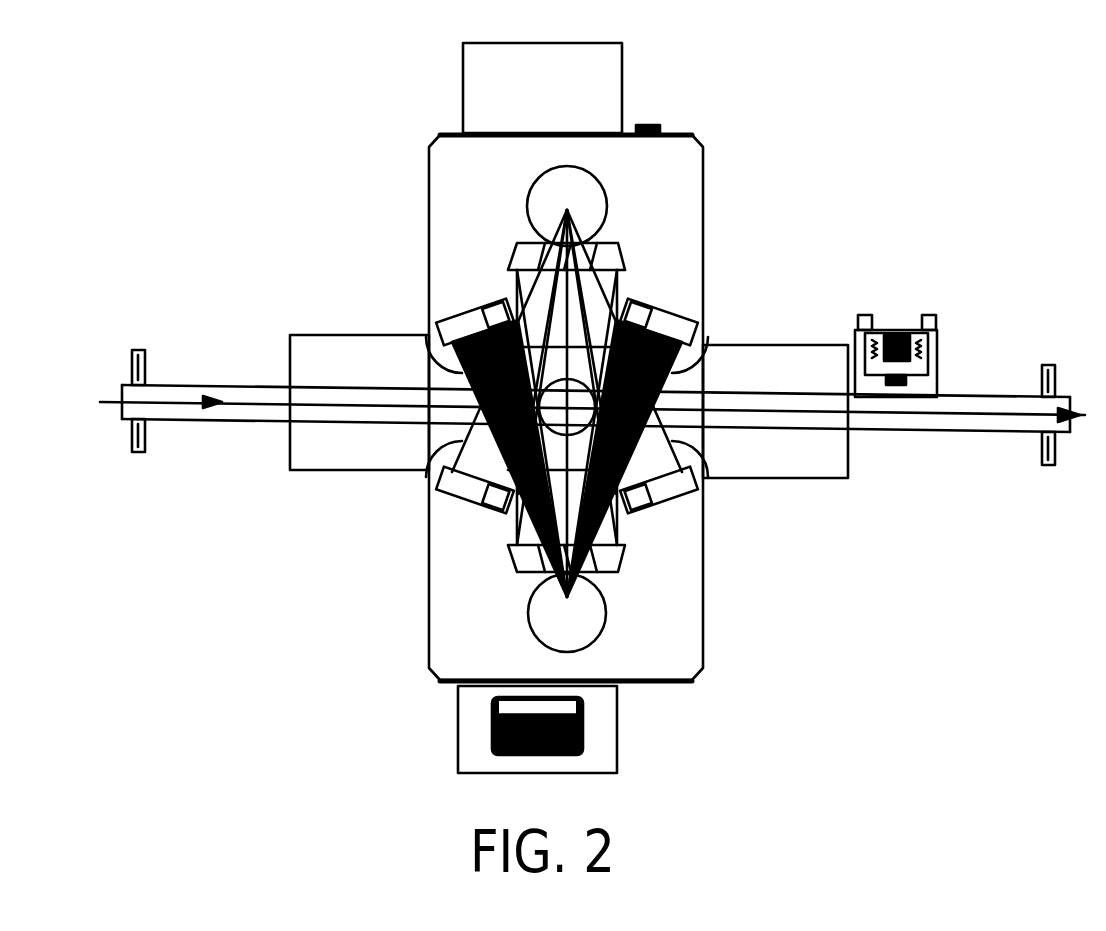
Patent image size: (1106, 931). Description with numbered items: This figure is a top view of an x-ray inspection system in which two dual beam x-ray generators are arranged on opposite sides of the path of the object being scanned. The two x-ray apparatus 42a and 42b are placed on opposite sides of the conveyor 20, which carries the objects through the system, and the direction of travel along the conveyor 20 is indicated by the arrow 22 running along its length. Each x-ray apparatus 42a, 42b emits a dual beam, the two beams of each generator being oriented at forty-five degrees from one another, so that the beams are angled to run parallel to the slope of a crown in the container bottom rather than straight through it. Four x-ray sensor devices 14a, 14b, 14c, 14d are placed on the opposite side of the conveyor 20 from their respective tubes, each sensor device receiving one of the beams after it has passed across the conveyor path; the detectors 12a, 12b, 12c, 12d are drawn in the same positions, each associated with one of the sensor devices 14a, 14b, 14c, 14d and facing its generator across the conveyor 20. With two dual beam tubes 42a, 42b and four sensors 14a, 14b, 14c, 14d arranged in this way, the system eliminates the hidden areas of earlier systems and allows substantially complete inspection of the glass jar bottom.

The detector 12a is at (437, 490).
The detector 12b is at (698, 490).
The detector 12c is at (698, 326).
The detector 12d is at (437, 324).
The x-ray sensor device 14a is at (492, 508).
The x-ray sensor device 14b is at (642, 514).
The x-ray sensor device 14c is at (644, 306).
The x-ray sensor device 14d is at (490, 305).
The conveyor 20 is at (256, 418).
The beam 22 is at (100, 402).
The x-ray apparatus 42a is at (692, 182).
The x-ray apparatus 42b is at (690, 668).